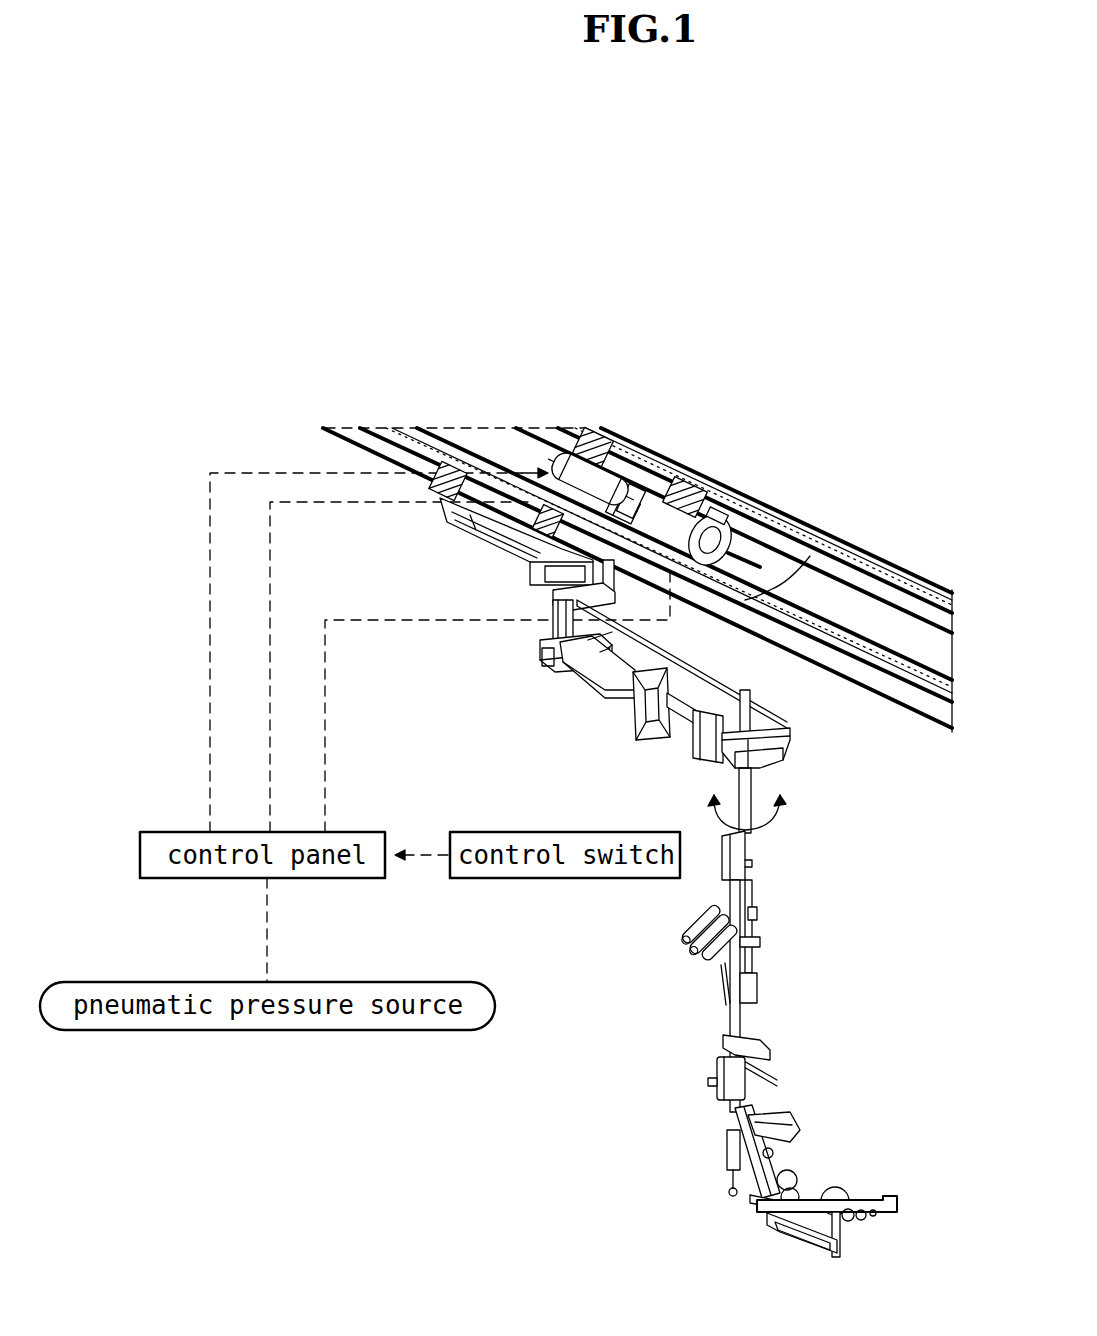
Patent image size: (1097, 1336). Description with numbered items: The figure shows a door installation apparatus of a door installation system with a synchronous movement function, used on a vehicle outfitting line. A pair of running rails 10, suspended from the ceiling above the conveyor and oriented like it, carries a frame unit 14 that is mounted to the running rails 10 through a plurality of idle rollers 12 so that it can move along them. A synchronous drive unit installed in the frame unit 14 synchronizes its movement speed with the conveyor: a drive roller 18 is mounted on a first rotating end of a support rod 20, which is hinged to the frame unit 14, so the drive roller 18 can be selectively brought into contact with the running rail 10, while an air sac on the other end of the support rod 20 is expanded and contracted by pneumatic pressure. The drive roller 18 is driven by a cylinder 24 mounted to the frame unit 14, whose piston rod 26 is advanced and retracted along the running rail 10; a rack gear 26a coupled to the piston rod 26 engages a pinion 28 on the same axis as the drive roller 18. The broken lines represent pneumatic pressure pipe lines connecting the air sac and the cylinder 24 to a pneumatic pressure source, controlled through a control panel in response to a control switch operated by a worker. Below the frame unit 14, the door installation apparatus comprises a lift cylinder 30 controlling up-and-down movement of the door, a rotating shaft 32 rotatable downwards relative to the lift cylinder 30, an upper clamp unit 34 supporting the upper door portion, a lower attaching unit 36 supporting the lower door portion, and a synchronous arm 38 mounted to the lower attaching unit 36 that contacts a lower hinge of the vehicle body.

The running rails 10 is at (880, 680).
The idle rollers 12 is at (620, 468).
The frame unit 14 is at (492, 543).
The drive roller 18 is at (748, 535).
The support rod 20 is at (690, 592).
The cylinder 24 is at (620, 438).
The piston rod 26 is at (672, 470).
The rack gear 26a is at (810, 556).
The pinion 28 is at (748, 633).
The lift cylinder 30 is at (582, 660).
The rotating shaft 32 is at (755, 800).
The upper clamp unit 34 is at (700, 930).
The lower attaching unit 36 is at (784, 1175).
The synchronous arm 38 is at (890, 1197).